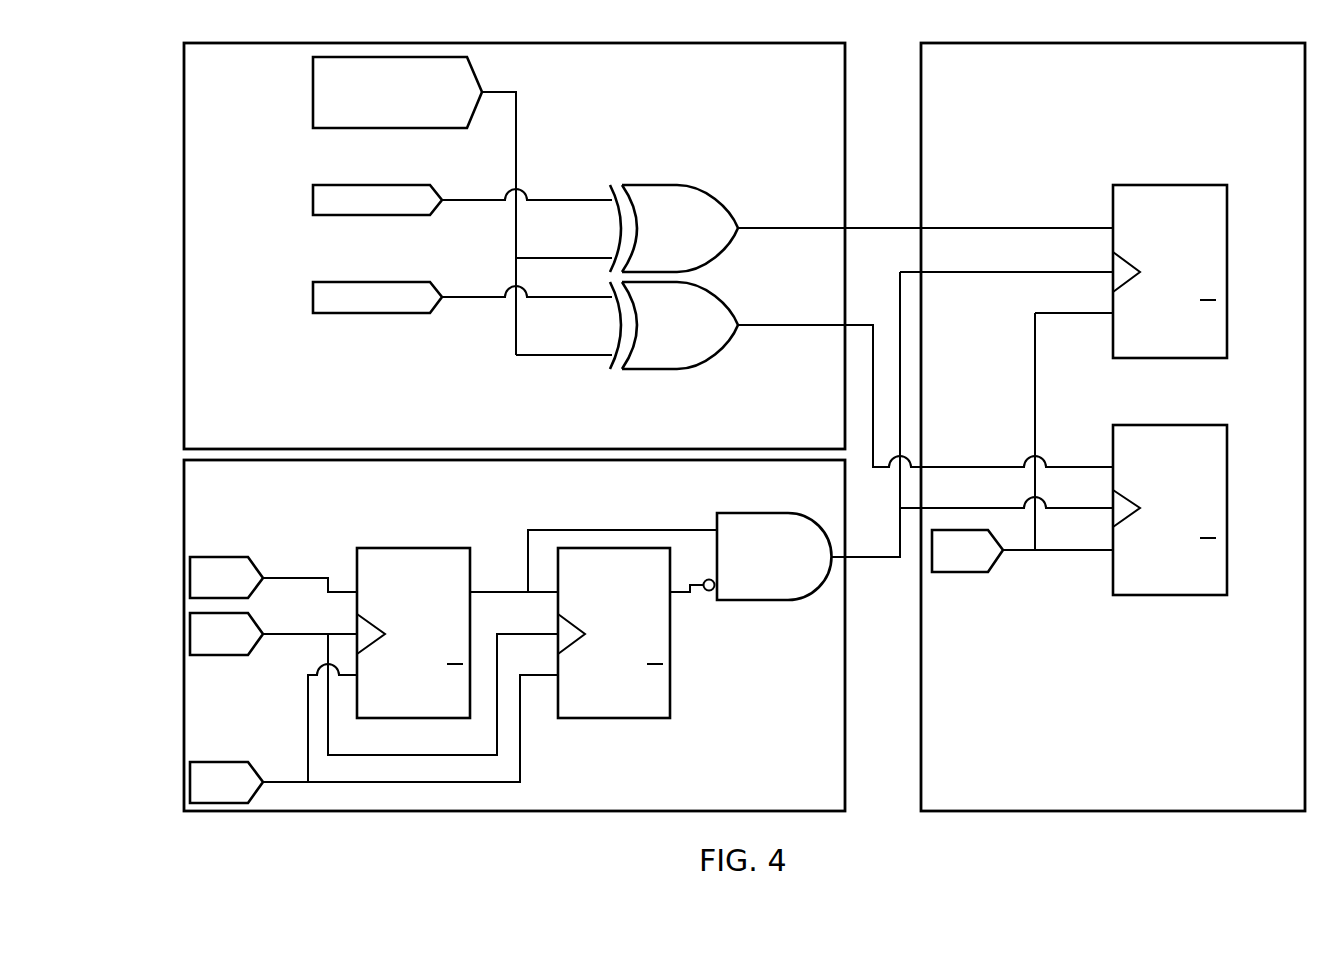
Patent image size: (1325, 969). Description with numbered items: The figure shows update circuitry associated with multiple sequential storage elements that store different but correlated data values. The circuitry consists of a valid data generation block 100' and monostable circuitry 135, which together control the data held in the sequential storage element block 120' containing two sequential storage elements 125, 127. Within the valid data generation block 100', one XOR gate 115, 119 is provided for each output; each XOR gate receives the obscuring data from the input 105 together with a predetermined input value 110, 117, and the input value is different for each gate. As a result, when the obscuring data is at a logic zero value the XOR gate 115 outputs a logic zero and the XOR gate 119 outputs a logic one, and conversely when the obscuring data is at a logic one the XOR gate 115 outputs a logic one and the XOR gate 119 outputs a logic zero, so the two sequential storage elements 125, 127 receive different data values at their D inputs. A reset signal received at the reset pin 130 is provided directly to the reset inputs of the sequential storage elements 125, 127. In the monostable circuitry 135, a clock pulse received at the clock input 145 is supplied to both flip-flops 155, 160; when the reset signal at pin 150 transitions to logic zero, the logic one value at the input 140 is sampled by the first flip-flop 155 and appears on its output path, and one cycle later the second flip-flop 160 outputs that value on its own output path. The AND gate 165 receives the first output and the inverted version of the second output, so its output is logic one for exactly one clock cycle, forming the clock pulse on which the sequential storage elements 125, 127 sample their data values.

The valid data generation block 100' is at (514, 246).
The obscuring data input 105 is at (313, 90).
The predetermined input value 110 is at (313, 198).
The XOR gate 115 is at (716, 206).
The predetermined input value 117 is at (313, 295).
The XOR gate 119 is at (716, 303).
The sequential storage element block 120' is at (1113, 427).
The sequential storage element 125 is at (1168, 185).
The sequential storage element 127 is at (1168, 425).
The reset pin 130 is at (968, 572).
The monostable circuitry 135 is at (472, 811).
The logic 1 input 140 is at (190, 577).
The clock input 145 is at (190, 637).
The reset pin 150 is at (190, 779).
The flip-flop 155 is at (414, 548).
The flip-flop 160 is at (615, 718).
The AND gate 165 is at (765, 600).